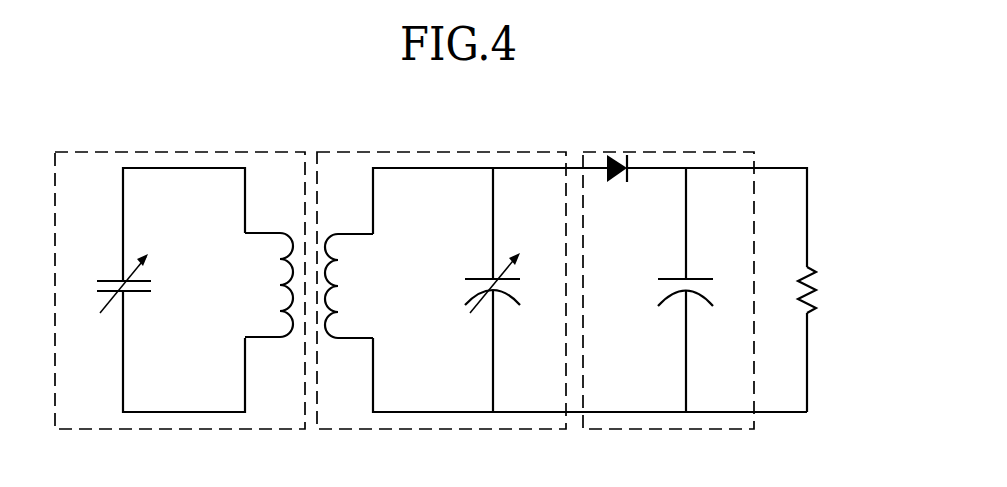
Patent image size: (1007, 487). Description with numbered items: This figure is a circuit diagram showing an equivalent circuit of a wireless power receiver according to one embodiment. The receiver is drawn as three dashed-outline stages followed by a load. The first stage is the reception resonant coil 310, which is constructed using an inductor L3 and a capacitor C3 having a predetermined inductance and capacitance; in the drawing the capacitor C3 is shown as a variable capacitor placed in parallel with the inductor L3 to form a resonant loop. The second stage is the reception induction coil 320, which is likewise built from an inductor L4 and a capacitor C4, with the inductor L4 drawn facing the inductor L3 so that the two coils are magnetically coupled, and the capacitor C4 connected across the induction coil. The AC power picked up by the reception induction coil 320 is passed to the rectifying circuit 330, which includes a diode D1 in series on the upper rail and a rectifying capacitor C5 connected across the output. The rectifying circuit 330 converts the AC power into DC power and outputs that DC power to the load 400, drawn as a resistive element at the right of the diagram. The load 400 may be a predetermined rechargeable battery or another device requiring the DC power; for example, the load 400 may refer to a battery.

The reception resonant coil 310 is at (212, 150).
The reception induction coil 320 is at (466, 150).
The rectifying circuit 330 is at (689, 150).
The load 400 is at (828, 258).
The capacitor C3 is at (108, 283).
The inductor L3 is at (268, 285).
The inductor L4 is at (353, 286).
The capacitor C4 is at (509, 290).
The diode D1 is at (615, 150).
The rectifying capacitor C5 is at (702, 290).